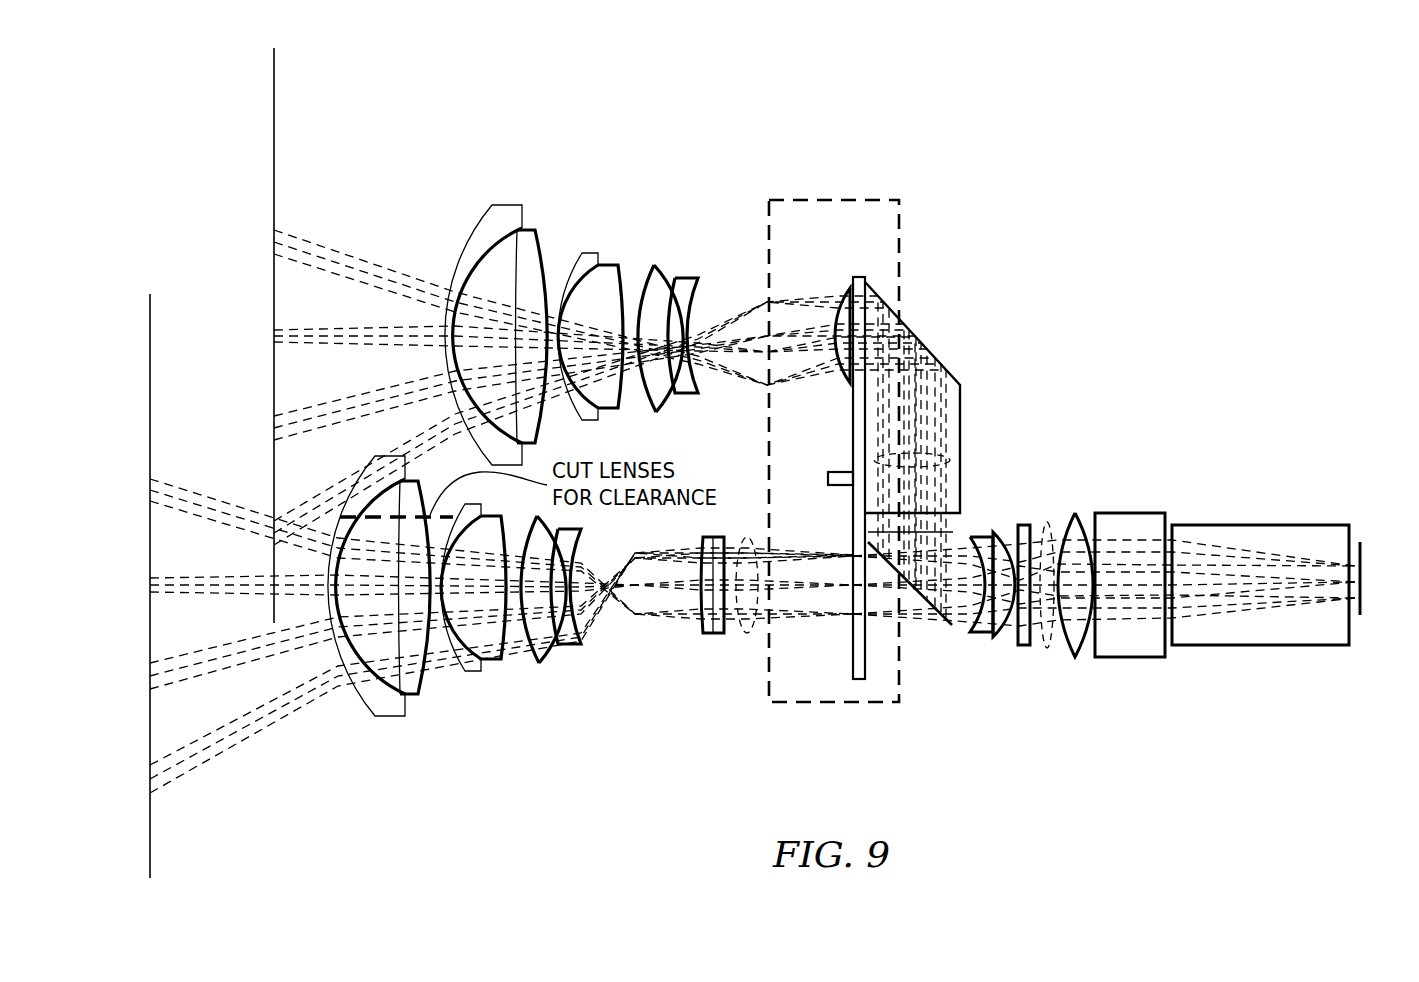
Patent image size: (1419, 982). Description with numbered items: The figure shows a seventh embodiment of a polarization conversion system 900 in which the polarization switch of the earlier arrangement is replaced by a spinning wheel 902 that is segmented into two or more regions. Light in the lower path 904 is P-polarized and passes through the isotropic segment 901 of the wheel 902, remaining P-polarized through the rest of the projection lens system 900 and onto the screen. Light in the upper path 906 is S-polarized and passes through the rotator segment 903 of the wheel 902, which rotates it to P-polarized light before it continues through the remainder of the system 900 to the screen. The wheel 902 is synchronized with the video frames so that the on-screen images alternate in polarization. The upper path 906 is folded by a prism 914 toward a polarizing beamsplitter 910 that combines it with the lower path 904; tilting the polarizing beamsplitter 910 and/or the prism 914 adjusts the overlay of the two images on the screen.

The polarization conversion system 900 is at (1131, 203).
The isotropic segment 901 is at (852, 645).
The spinning wheel 902 is at (822, 702).
The rotator segment 903 is at (858, 277).
The lower path 904 is at (745, 633).
The upper path 906 is at (946, 461).
The polarizing beamsplitter 910 is at (939, 631).
The prism 914 is at (960, 412).